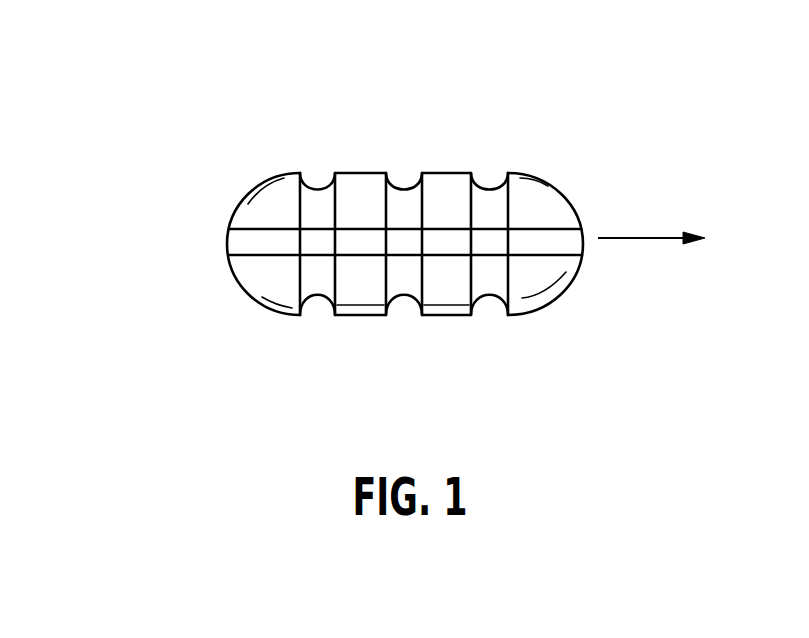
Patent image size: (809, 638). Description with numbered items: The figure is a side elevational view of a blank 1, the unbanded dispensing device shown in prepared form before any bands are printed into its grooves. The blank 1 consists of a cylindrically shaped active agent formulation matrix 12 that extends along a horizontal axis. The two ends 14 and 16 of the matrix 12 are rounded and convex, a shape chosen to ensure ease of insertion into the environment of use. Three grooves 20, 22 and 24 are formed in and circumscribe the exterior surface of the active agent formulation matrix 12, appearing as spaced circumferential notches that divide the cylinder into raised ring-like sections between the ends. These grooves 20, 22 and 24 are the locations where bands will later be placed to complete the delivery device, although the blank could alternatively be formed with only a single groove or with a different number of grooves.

The blank 1 is at (588, 153).
The active agent formulation matrix 12 is at (408, 238).
The end 14 is at (238, 207).
The end 16 is at (582, 265).
The groove 20 is at (318, 188).
The groove 22 is at (403, 188).
The groove 24 is at (490, 188).